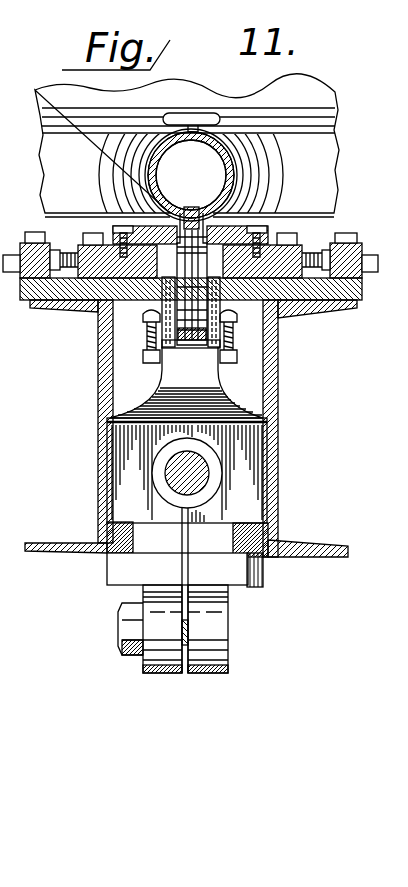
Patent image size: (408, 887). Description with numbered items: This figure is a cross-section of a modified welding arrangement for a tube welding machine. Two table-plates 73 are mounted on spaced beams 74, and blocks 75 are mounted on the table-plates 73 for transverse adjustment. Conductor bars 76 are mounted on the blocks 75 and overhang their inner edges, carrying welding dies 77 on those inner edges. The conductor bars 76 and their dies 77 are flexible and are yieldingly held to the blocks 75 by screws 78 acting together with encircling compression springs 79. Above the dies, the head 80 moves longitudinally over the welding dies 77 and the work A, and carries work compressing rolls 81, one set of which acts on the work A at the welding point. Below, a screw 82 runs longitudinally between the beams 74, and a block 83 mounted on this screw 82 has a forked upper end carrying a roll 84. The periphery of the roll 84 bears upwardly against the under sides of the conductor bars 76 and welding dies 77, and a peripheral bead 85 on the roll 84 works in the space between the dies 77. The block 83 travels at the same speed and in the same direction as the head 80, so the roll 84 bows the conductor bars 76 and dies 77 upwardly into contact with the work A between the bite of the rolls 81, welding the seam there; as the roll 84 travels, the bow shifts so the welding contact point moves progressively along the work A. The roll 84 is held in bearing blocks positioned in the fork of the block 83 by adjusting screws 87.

The table-plate 73 is at (33, 293).
The beam 74 is at (100, 382).
The block 75 is at (190, 252).
The conductor bar 76 is at (138, 220).
The welding die 77 is at (192, 207).
The screw 78 is at (267, 250).
The compression spring 79 is at (123, 242).
The head 80 is at (267, 100).
The work compressing roll 81 is at (57, 153).
The screw 82 is at (182, 490).
The block 83 is at (250, 473).
The roll 84 is at (182, 347).
The peripheral bead 85 is at (188, 347).
The adjusting screw 87 is at (228, 347).
The work A is at (203, 145).